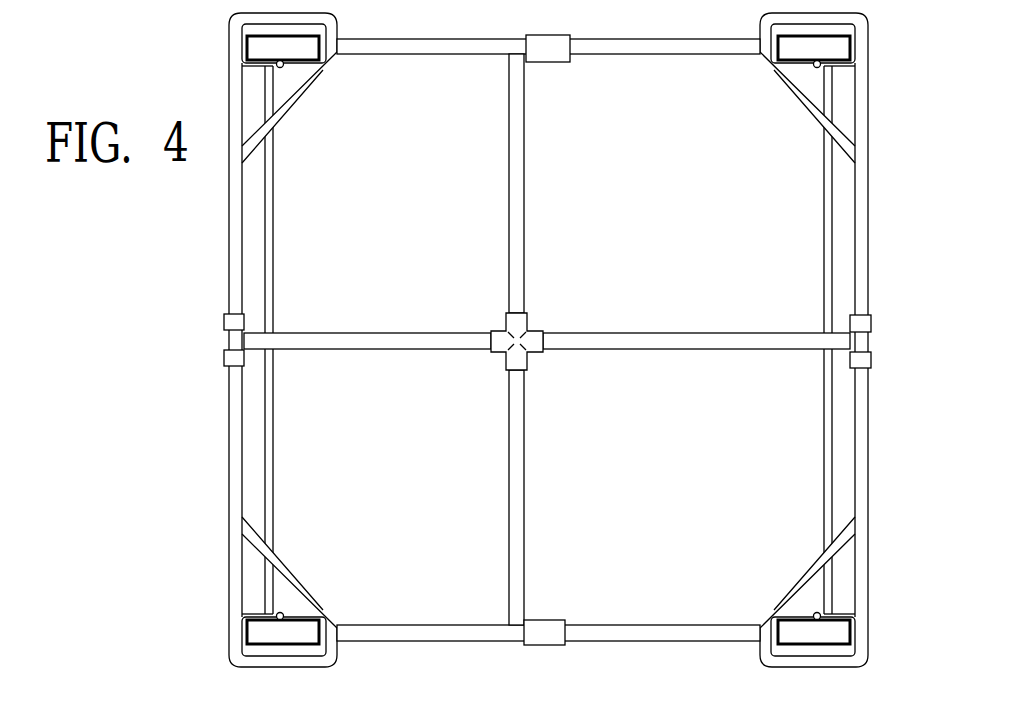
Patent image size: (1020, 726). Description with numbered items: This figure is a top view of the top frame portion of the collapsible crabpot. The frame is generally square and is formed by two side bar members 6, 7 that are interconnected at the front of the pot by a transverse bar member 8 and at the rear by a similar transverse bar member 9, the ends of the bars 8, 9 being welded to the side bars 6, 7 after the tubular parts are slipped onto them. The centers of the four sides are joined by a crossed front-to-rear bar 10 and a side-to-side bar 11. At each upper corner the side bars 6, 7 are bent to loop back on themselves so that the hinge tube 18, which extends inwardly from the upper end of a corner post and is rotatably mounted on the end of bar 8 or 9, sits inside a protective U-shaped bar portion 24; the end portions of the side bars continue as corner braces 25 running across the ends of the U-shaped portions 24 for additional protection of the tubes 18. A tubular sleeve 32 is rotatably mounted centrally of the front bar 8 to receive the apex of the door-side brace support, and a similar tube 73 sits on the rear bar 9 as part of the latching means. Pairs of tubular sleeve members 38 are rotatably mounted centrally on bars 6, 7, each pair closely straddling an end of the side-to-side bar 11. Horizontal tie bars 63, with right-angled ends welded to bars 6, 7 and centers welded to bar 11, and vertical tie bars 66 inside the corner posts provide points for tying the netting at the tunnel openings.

The side bar member 6 is at (230, 183).
The side bar member 7 is at (868, 187).
The transverse bar member 8 is at (445, 641).
The transverse bar member 9 is at (660, 40).
The front-to-rear bar 10 is at (509, 157).
The side-to-side bar 11 is at (645, 332).
The tube 18 is at (260, 48).
The U-shaped bar portion 24 is at (332, 10).
The corner brace 25 is at (285, 112).
The tubular sleeve 32 is at (545, 621).
The tubular sleeve member 38 is at (229, 321).
The tie bar 63 is at (268, 200).
The vertical tie bar 66 is at (318, 66).
The tube 73 is at (560, 36).